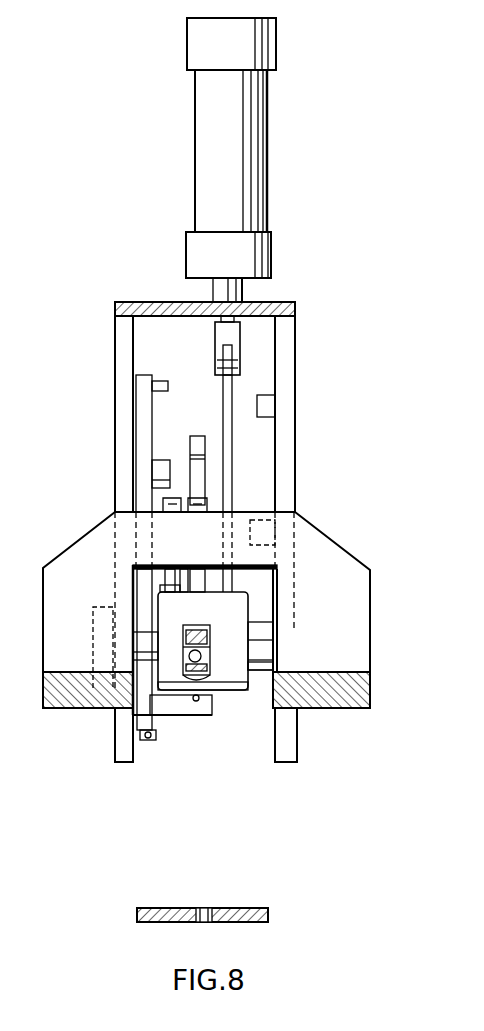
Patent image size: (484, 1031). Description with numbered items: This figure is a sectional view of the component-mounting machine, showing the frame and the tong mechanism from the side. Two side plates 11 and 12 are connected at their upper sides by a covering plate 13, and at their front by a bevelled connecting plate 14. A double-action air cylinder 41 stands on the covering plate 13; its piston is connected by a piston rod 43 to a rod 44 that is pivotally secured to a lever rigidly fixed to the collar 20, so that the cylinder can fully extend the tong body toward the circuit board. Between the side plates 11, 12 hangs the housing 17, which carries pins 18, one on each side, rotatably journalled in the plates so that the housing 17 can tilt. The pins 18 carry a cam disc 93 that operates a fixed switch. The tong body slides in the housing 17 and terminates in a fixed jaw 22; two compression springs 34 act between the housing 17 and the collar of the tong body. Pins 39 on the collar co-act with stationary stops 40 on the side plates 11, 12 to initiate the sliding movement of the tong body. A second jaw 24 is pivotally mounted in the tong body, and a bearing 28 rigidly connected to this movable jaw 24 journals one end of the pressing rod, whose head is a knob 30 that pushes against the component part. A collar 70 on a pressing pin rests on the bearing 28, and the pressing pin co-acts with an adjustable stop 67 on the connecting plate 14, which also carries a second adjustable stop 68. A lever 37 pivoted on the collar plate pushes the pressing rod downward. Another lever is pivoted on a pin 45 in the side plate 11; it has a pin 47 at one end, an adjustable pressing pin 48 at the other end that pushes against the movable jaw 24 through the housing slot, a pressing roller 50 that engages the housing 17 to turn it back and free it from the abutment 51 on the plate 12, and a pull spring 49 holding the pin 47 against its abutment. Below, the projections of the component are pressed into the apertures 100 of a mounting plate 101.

The double-action air cylinder 41 is at (215, 125).
The covering plate 13 is at (160, 304).
The side plate 11 is at (117, 337).
The side plate 12 is at (287, 337).
The bevelled connecting plate 14 is at (92, 542).
The piston rod 43 is at (213, 321).
The compression springs 34 is at (222, 350).
The rod 44 is at (228, 441).
The stop 40 is at (265, 404).
The pin 47 is at (168, 387).
The pressing roller 50 is at (160, 462).
The lever 37 is at (198, 436).
The adjustable stop 67 is at (207, 505).
The abutment 51 is at (262, 533).
The pin 45 is at (150, 577).
The adjustable stop 68 is at (178, 566).
The collar 20 is at (235, 614).
The fixed jaw 22 is at (190, 625).
The collar 70 is at (210, 640).
The knob 30 is at (212, 657).
The bearing 28 is at (209, 666).
The second jaw 24 is at (208, 679).
The housing 17 is at (216, 688).
The pins 18 is at (133, 645).
The pins 39 is at (283, 665).
The cam disc 93 is at (100, 630).
The adjustable pressing pin 48 is at (197, 702).
The pull spring 49 is at (152, 738).
The mounting plate 101 is at (148, 908).
The apertures 100 is at (210, 908).